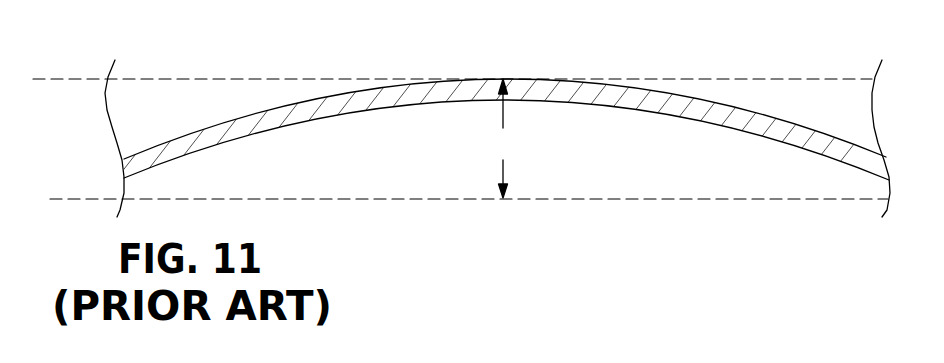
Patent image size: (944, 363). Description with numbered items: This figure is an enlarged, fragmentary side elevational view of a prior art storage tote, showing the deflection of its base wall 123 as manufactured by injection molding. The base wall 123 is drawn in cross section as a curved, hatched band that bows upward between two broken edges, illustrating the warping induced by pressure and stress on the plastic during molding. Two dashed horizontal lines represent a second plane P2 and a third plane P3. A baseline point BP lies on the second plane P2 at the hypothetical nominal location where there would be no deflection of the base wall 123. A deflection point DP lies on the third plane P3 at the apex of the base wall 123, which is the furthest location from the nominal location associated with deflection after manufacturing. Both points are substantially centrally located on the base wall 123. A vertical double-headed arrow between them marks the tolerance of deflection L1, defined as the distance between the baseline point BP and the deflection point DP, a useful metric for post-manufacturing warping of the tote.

The base wall 123 is at (237, 107).
The third plane P3 is at (48, 79).
The second plane P2 is at (62, 198).
The tolerance of deflection L1 is at (506, 138).
The deflection point DP is at (503, 79).
The baseline point BP is at (503, 199).